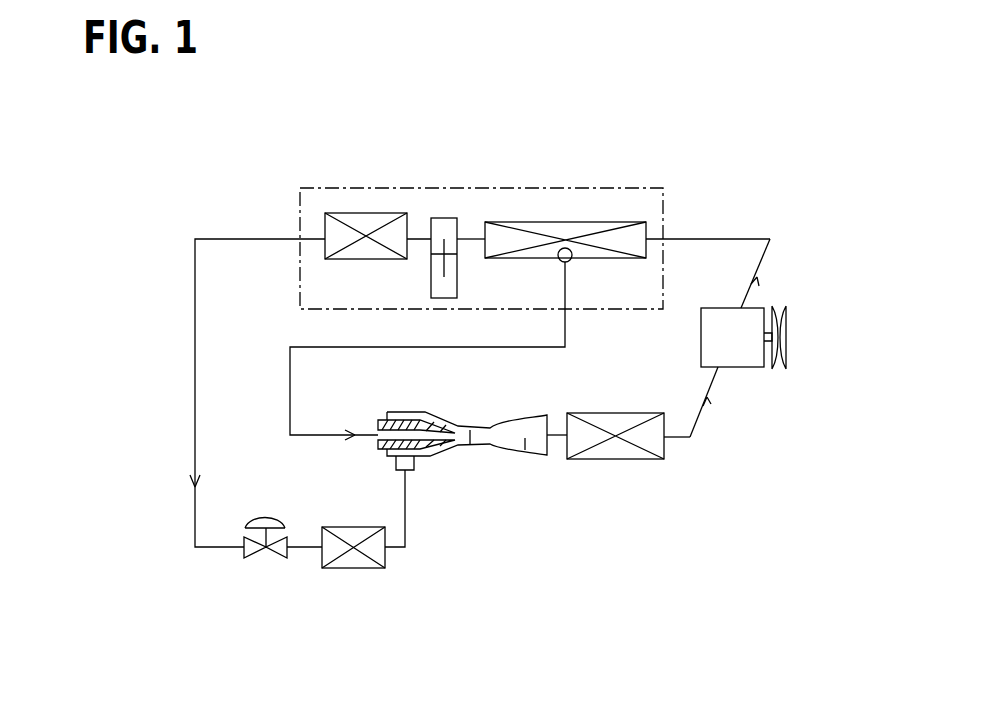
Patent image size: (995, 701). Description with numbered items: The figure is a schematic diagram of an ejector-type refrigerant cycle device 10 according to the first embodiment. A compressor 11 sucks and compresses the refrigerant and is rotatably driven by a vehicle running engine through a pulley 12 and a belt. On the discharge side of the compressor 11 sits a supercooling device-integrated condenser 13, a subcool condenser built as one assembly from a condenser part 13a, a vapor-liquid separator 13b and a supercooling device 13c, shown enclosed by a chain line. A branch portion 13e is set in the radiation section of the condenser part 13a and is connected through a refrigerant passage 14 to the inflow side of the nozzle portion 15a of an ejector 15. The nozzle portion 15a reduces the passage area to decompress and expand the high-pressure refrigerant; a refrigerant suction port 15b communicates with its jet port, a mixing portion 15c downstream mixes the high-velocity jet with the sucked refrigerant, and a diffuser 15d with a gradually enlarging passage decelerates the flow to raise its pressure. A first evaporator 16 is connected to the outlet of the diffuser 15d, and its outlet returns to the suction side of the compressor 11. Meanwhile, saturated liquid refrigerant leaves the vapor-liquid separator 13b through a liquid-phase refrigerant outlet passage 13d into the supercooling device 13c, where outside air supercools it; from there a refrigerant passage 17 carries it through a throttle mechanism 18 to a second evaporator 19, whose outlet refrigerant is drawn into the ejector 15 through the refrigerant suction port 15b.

The refrigerant cycle device 10 is at (713, 239).
The compressor 11 is at (752, 308).
The pulley 12 is at (788, 342).
The supercooling device-integrated condenser 13 is at (625, 188).
The condenser part 13a is at (577, 221).
The vapor-liquid separator 13b is at (452, 217).
The supercooling device 13c is at (365, 217).
The liquid-phase refrigerant outlet passage 13d is at (437, 217).
The branch portion 13e is at (571, 261).
The refrigerant passage 14 is at (312, 347).
The ejector 15 is at (498, 422).
The nozzle portion 15a is at (442, 419).
The refrigerant suction port 15b is at (414, 462).
The mixing portion 15c is at (470, 444).
The diffuser 15d is at (525, 450).
The first evaporator 16 is at (664, 450).
The refrigerant passage 17 is at (195, 298).
The throttle mechanism 18 is at (255, 558).
The second evaporator 19 is at (361, 568).